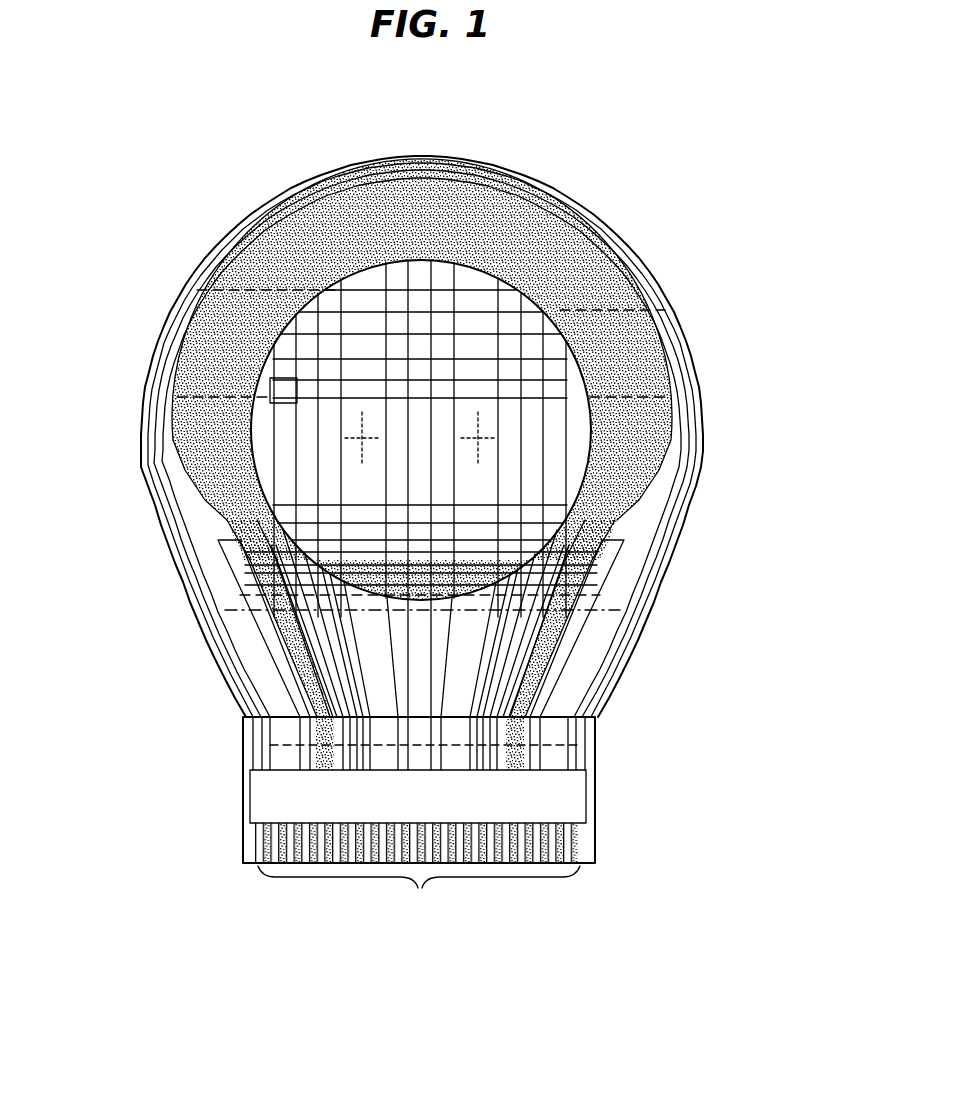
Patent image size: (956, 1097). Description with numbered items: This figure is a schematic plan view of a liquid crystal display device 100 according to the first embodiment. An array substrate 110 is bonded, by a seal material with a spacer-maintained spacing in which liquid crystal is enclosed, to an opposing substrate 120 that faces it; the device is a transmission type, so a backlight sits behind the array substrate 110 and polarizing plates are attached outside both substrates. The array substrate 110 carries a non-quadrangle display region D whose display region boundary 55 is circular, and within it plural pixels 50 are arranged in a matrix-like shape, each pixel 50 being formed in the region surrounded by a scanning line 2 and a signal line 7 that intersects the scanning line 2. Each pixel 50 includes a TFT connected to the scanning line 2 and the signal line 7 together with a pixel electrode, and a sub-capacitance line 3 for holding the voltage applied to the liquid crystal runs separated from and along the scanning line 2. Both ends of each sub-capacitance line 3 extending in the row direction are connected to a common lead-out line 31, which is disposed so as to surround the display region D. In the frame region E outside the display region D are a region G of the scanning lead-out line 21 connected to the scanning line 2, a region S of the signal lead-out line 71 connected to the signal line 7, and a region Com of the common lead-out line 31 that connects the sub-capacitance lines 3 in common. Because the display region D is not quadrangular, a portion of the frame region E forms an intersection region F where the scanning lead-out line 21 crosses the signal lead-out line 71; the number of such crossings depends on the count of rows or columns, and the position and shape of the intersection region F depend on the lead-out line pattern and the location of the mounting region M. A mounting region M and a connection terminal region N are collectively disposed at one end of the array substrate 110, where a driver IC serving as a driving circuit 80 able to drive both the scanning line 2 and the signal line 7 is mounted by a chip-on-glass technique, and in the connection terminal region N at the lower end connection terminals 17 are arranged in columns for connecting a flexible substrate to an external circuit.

The liquid crystal display device 100 is at (730, 941).
The array substrate 110 is at (128, 945).
The opposing substrate 120 is at (126, 828).
The driving circuit 80 is at (501, 790).
The mounting region M is at (422, 798).
The connection terminals 17 is at (416, 883).
The connection terminal region N is at (419, 896).
The region of the signal lead-out line S is at (403, 762).
The region of the scanning lead-out line G is at (424, 726).
The region of the common lead-out line Com is at (324, 644).
The signal lead-out line 71 is at (380, 447).
The scanning lead-out line 21 is at (415, 628).
The intersection region F is at (389, 443).
The frame region E is at (391, 440).
The signal line 7 is at (339, 511).
The pixel 50 is at (48, 353).
The display region boundary 55 is at (486, 374).
The sub-capacitance line 3 is at (518, 437).
The scanning line 2 is at (521, 430).
The display region D is at (447, 455).
The common lead-out line 31 is at (447, 438).